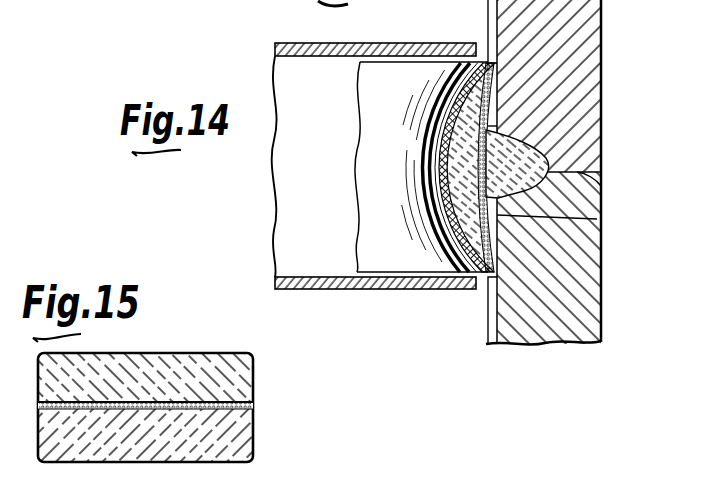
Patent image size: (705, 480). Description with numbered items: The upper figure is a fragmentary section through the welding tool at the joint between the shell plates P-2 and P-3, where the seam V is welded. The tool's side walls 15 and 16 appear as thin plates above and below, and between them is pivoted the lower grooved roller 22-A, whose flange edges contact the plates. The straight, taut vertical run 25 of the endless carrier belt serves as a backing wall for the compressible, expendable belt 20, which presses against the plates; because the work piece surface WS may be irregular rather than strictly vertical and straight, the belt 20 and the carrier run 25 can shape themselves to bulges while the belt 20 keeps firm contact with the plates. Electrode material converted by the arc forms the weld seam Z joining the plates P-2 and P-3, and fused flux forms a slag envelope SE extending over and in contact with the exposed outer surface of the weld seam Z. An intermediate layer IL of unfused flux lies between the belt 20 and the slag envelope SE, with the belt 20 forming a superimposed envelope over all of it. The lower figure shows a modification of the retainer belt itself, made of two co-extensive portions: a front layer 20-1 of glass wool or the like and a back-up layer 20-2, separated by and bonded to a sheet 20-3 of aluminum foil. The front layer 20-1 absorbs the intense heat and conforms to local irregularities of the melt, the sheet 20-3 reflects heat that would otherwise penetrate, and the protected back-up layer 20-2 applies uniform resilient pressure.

In FIG. 14, the side wall 15 is at (380, 43).
In FIG. 14, the side wall 16 is at (365, 289).
In FIG. 14, the grooved roller 22-A is at (360, 233).
In FIG. 14, the vertical run of carrier belt 25 is at (440, 156).
In FIG. 14, the belt 20 is at (493, 97).
In FIG. 14, the shell plate P-2 is at (603, 32).
In FIG. 14, the shell plate P-3 is at (583, 303).
In FIG. 14, the work piece surface WS is at (486, 323).
In FIG. 14, the weld seam Z is at (535, 158).
In FIG. 14, the intermediate layer IL is at (493, 126).
In FIG. 14, the seam V is at (601, 187).
In FIG. 14, the slag envelope SE is at (597, 219).
In FIG. 15, the front layer 20-1 is at (245, 383).
In FIG. 15, the back-up layer 20-2 is at (245, 442).
In FIG. 15, the sheet of aluminum foil 20-3 is at (242, 405).